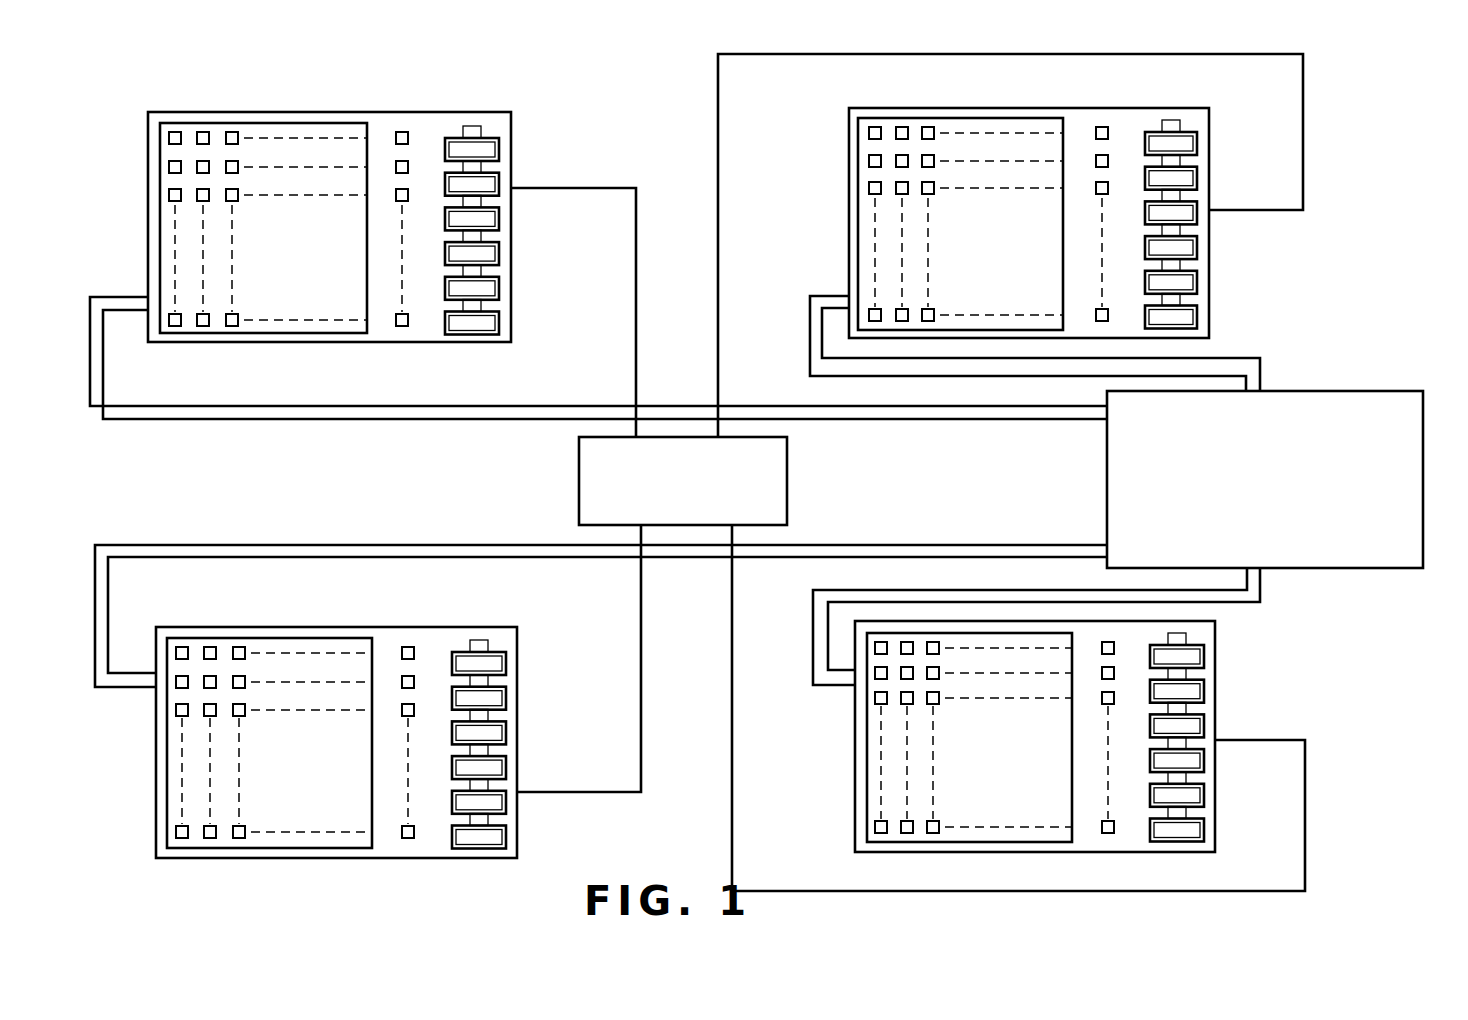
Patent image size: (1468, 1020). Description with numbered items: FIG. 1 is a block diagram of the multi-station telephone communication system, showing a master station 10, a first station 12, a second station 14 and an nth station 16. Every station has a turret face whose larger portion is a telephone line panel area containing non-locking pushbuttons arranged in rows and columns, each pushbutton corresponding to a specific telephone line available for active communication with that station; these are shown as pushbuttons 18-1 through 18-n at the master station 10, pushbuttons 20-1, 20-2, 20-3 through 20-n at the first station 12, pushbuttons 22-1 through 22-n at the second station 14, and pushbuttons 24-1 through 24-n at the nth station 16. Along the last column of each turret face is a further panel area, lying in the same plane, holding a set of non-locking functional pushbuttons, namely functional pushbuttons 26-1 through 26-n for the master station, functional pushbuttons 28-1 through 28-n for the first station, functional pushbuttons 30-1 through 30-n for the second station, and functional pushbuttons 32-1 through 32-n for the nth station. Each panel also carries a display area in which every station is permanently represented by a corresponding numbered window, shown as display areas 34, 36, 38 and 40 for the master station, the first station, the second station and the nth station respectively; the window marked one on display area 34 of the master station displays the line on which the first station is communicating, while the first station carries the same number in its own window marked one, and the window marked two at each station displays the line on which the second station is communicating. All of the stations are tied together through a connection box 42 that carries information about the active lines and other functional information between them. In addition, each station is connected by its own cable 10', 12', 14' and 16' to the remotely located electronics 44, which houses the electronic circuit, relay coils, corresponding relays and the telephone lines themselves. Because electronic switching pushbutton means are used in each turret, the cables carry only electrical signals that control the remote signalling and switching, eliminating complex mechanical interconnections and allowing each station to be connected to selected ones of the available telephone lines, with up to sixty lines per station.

The master station 10 is at (327, 232).
The cable 10' is at (598, 358).
The station 1 12 is at (1010, 245).
The cable 12' is at (1006, 343).
The station 2 14 is at (398, 706).
The cable 14' is at (601, 616).
The station n 16 is at (1018, 708).
The cable 16' is at (1036, 622).
The pushbutton 18-1 is at (169, 139).
The pushbutton 18-n is at (236, 313).
The pushbutton 20-1 is at (869, 134).
The pushbutton 20-2 is at (869, 161).
The pushbutton 20-3 is at (869, 191).
The pushbutton 20-n is at (928, 309).
The pushbutton 22-1 is at (182, 647).
The pushbutton 22-n is at (243, 843).
The pushbutton 24-1 is at (875, 648).
The pushbutton 24-n is at (933, 833).
The functional pushbutton 26-1 is at (405, 132).
The functional pushbutton 26-n is at (403, 327).
The functional pushbutton 28-1 is at (1096, 133).
The functional pushbutton 28-n is at (1102, 309).
The functional pushbutton 30-1 is at (408, 647).
The functional pushbutton 30-n is at (408, 826).
The functional pushbutton 32-1 is at (1102, 649).
The functional pushbutton 32-n is at (1102, 821).
The display area 34 is at (492, 130).
The display area 36 is at (1196, 127).
The display area 38 is at (481, 625).
The display area 40 is at (1203, 638).
The connection box 42 is at (579, 495).
The remote electronics 44 is at (1400, 558).